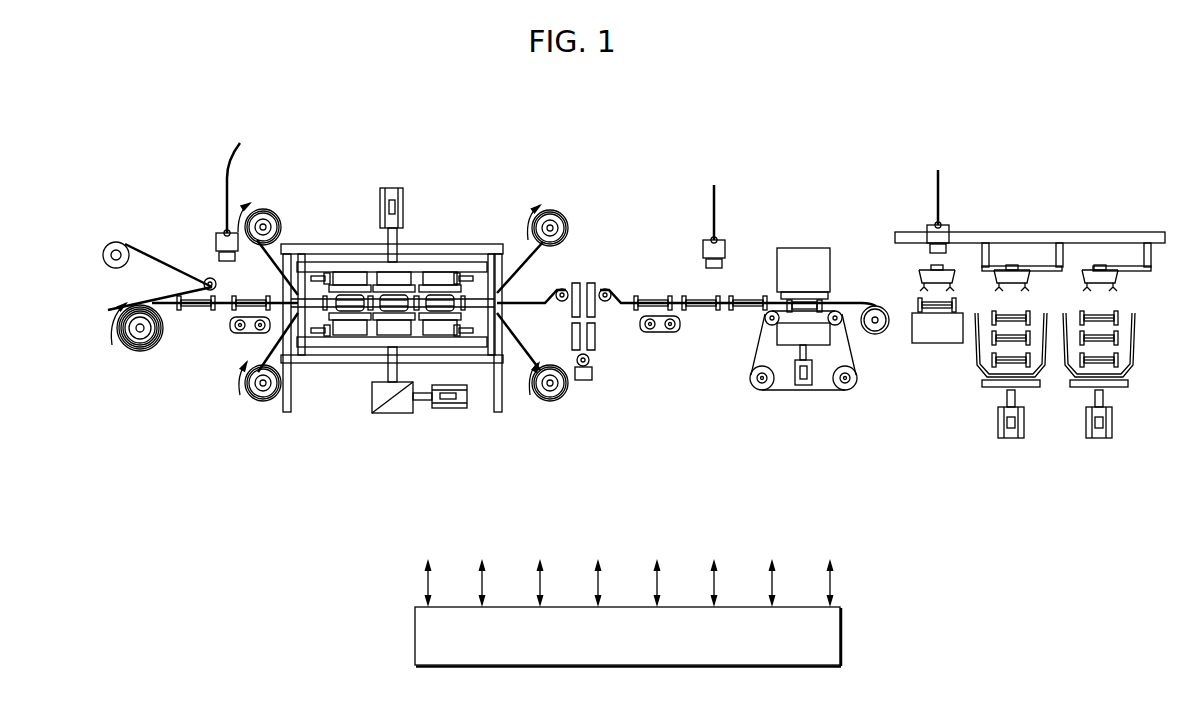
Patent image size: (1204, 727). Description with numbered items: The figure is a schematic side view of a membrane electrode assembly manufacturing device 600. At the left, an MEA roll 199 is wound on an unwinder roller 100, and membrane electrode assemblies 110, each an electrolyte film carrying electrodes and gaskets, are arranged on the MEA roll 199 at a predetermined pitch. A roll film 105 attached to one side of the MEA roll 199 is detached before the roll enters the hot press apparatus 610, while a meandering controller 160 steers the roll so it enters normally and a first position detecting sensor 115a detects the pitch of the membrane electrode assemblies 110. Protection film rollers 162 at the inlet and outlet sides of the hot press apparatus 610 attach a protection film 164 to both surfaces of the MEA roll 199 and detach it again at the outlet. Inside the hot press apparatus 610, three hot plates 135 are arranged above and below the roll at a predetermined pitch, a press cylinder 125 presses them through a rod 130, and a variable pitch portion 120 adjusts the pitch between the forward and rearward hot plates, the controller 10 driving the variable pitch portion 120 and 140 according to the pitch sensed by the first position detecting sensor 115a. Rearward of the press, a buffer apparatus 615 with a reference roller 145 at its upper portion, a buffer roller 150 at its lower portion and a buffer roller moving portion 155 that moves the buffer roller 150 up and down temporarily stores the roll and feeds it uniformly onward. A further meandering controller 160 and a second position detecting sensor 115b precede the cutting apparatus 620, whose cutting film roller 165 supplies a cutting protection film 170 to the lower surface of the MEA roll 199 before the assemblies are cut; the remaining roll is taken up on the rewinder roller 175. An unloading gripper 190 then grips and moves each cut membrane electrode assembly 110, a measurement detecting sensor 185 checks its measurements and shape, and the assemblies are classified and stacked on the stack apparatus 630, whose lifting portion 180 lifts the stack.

The controller 10 is at (843, 637).
The unwinder roller 100 is at (118, 360).
The roll film 105 is at (143, 247).
The membrane electrode assembly 110 is at (243, 298).
The first position detecting sensor 115a is at (220, 233).
The second position detecting sensor 115b is at (708, 243).
The variable pitch portion 120 is at (317, 274).
The press cylinder 125 is at (392, 188).
The rod 130 is at (395, 258).
The hot plate 135 is at (358, 295).
The variable pitch portion 140 is at (466, 274).
The reference roller 145 is at (570, 283).
The buffer roller 150 is at (588, 366).
The buffer roller moving portion 155 is at (583, 381).
The meandering controller 160 is at (230, 327).
The protection film roller 162 is at (258, 402).
The protection film 164 is at (257, 347).
The cutting film roller 165 is at (757, 381).
The cutting protection film 170 is at (774, 391).
The rewinder roller 175 is at (875, 335).
The lifting portion 180 is at (1114, 417).
The measurement detecting sensor 185 is at (942, 226).
The unloading gripper 190 is at (905, 280).
The MEA roll 199 is at (165, 312).
The membrane electrode assembly manufacturing device 600 is at (616, 118).
The hot press apparatus 610 is at (358, 202).
The buffer apparatus 615 is at (572, 262).
The cutting apparatus 620 is at (803, 243).
The stack apparatus 630 is at (1094, 450).